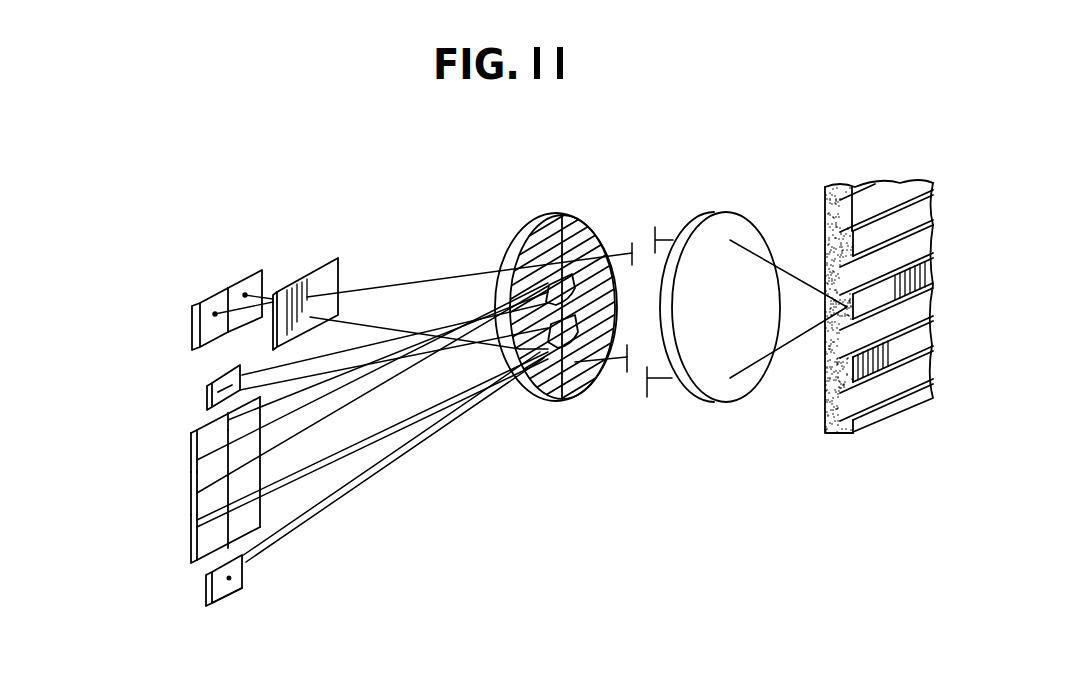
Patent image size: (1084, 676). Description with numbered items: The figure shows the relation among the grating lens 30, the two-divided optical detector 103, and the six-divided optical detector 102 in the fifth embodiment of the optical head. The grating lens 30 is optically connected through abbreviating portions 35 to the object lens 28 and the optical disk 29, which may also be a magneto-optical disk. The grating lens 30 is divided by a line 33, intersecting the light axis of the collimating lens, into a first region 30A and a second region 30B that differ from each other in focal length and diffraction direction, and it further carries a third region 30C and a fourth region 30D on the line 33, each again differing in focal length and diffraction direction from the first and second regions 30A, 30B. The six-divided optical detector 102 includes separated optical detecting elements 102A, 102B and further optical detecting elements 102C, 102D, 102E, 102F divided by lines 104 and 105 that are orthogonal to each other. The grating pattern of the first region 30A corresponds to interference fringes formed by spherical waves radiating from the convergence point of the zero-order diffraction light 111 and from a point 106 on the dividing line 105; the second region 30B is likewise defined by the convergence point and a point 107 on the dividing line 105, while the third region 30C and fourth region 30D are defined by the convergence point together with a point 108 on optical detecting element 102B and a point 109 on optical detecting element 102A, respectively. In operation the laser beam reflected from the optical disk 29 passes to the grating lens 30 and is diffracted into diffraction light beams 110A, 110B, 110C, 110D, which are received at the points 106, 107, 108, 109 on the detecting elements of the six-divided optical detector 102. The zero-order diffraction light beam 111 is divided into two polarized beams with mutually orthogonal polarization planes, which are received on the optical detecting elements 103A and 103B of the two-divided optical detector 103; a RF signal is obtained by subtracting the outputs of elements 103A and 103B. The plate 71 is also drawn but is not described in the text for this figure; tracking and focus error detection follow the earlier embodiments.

The object lens 28 is at (720, 403).
The optical disk 29 is at (858, 430).
The grating lens 30 is at (551, 213).
The first region 30A is at (583, 382).
The second region 30B is at (534, 398).
The third region 30C is at (590, 255).
The fourth region 30D is at (565, 398).
The line 33 is at (577, 215).
The abbreviating portions 35 is at (634, 265).
The plate 71 is at (327, 258).
The six-divided optical detector 102 is at (120, 605).
The optical detecting element 102A is at (220, 603).
The optical detecting element 102B is at (210, 382).
The optical detecting element 102C is at (255, 530).
The optical detecting element 102D is at (227, 543).
The optical detecting element 102E is at (212, 439).
The optical detecting element 102F is at (250, 418).
The two-divided optical detector 103 is at (186, 318).
The optical detecting element 103A is at (252, 267).
The optical detecting element 103B is at (215, 297).
The dividing line 104 is at (195, 503).
The dividing line 105 is at (226, 546).
The point 106 is at (208, 465).
The point 107 is at (207, 535).
The point 108 is at (228, 388).
The point 109 is at (217, 601).
The diffraction light beam 110A is at (322, 425).
The diffraction light beam 110B is at (320, 470).
The diffraction light beam 110C is at (325, 506).
The diffraction light beam 110D is at (362, 337).
The zero-order diffraction light 111 is at (447, 270).